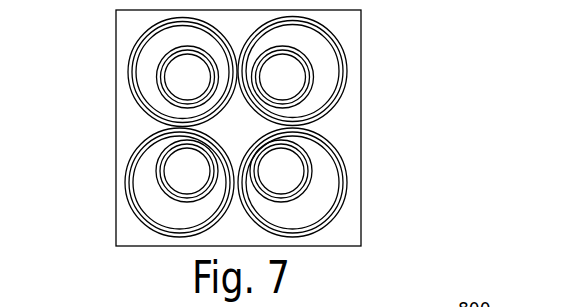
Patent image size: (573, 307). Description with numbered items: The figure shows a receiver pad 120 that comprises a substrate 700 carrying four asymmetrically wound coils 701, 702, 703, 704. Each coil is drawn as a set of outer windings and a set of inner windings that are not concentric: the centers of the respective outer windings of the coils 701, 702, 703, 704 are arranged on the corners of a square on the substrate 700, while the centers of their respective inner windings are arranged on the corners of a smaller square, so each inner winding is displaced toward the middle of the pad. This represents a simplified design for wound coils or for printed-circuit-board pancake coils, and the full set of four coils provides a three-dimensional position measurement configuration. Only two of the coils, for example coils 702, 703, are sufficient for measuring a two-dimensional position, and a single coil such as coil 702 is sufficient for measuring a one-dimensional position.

The receiver pad 120 is at (267, 126).
The substrate 700 is at (352, 145).
The asymmetrically wound coil 701 is at (132, 49).
The asymmetrically wound coil 702 is at (132, 157).
The asymmetrically wound coil 703 is at (343, 207).
The asymmetrically wound coil 704 is at (343, 97).